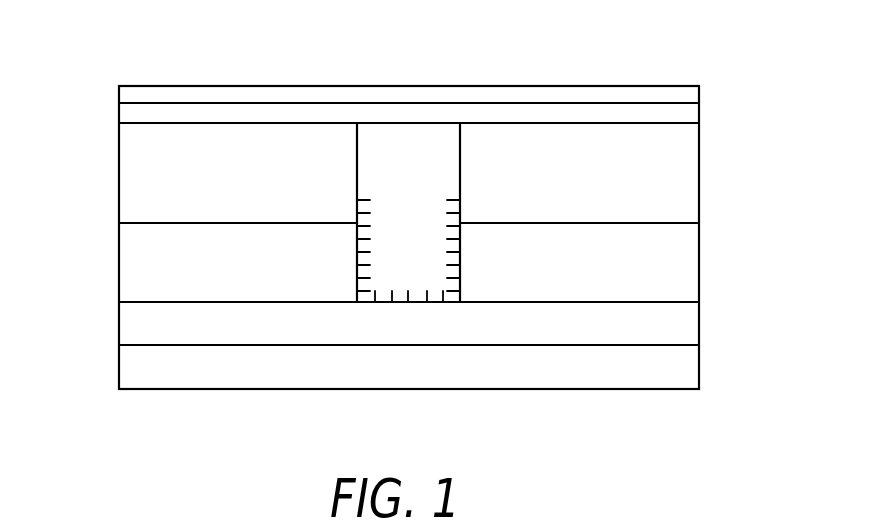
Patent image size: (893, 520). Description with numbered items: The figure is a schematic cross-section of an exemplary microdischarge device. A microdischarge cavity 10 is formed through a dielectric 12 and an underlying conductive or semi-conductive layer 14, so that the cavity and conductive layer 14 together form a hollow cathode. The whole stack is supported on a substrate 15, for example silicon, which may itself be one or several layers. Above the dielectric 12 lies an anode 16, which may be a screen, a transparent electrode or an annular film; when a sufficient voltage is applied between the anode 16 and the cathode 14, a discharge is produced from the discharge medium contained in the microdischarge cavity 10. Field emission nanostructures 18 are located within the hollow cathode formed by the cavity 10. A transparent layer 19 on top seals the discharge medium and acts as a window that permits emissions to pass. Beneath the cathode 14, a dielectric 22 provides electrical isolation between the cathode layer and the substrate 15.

The microdischarge cavity 10 is at (410, 153).
The dielectric 12 is at (141, 178).
The conductive layer 14 is at (141, 268).
The substrate 15 is at (678, 366).
The anode 16 is at (678, 115).
The field emission nanostructures 18 is at (441, 257).
The transparent layer 19 is at (141, 94).
The dielectric 22 is at (678, 320).